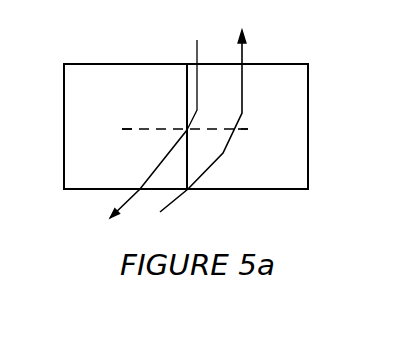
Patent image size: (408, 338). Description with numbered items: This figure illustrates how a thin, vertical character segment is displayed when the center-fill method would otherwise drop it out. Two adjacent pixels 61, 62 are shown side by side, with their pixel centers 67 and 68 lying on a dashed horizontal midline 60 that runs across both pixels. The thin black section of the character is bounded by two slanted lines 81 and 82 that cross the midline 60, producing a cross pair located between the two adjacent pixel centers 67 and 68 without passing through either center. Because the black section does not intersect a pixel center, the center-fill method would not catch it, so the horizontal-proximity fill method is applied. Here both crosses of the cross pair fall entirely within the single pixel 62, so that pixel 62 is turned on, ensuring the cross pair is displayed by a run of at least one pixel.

The interface plane (dashed line) 60 is at (163, 129).
The pixel 61 is at (80, 102).
The pixel 62 is at (297, 161).
The pixel center 67 is at (124, 129).
The pixel center 68 is at (247, 129).
The first light beam 81 is at (225, 154).
The second light beam 82 is at (187, 107).